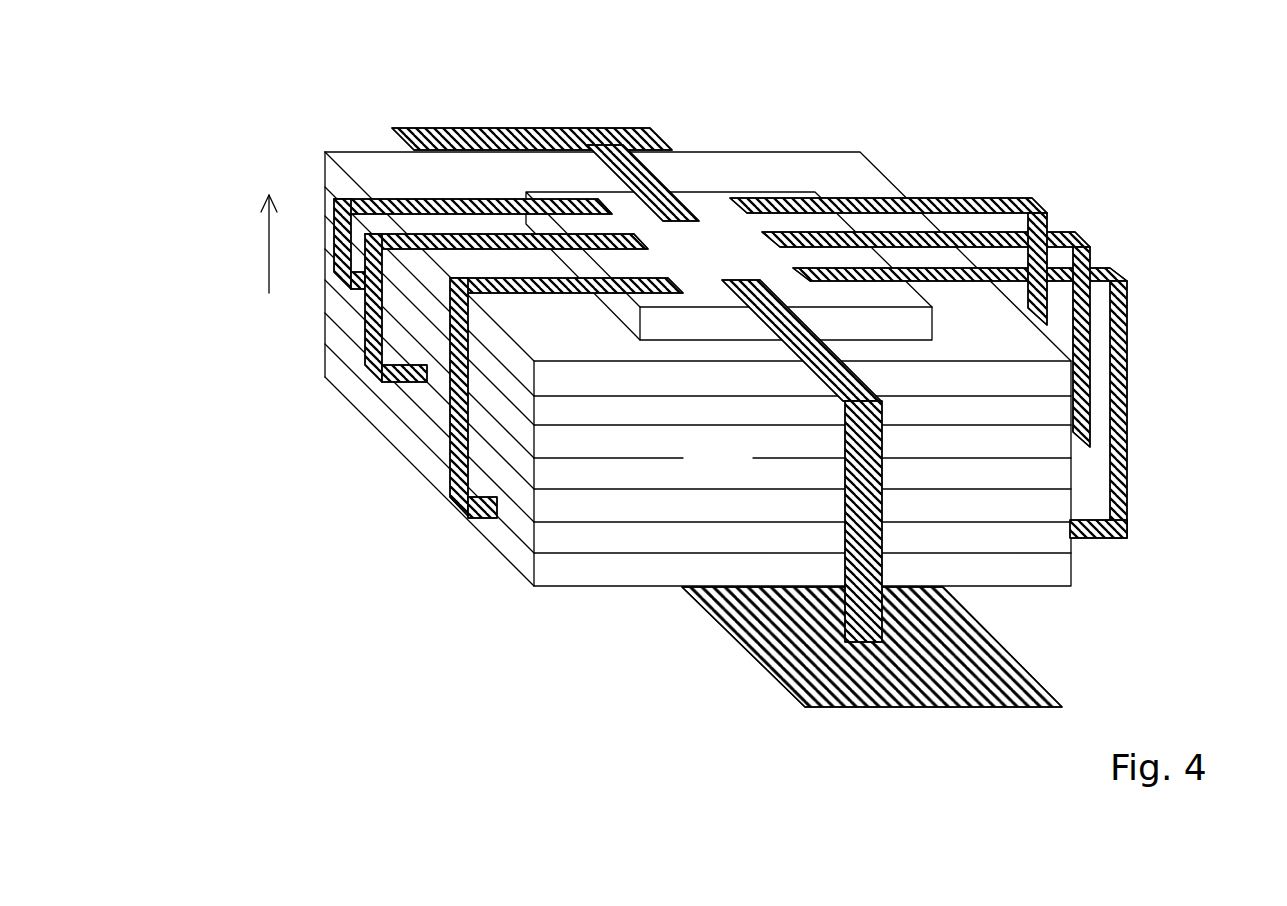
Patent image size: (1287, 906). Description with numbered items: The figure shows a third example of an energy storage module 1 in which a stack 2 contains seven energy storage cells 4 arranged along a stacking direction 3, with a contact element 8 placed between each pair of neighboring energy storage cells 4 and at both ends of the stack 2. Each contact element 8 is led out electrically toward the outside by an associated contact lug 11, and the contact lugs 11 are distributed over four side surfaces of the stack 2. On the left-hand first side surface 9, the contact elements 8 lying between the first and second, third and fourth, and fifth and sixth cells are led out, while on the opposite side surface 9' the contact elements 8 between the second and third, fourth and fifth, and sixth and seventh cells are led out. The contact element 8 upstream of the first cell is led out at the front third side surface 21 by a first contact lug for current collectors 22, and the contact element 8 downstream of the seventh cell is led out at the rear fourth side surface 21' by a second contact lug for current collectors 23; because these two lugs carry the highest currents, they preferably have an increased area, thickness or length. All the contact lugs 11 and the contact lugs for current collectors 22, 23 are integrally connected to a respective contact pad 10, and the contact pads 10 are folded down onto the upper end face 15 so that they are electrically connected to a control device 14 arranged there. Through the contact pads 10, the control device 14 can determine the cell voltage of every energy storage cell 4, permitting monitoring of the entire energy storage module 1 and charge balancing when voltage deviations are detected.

The energy storage module 1 is at (843, 127).
The stack 2 is at (528, 597).
The stacking direction 3 is at (256, 244).
The energy storage cell 4 is at (628, 572).
The contact element 8 is at (347, 367).
The first side surface 9 is at (429, 352).
The side surface located opposite the first side surface 9' is at (928, 331).
The contact pad 10 is at (448, 448).
The contact lug 11 is at (482, 517).
The control device 14 is at (737, 260).
The end face 15 is at (720, 167).
The third side surface 21 is at (802, 458).
The fourth side surface 21' is at (482, 218).
The first contact lug for current collectors 22 is at (942, 707).
The second contact lug for current collectors 23 is at (525, 128).